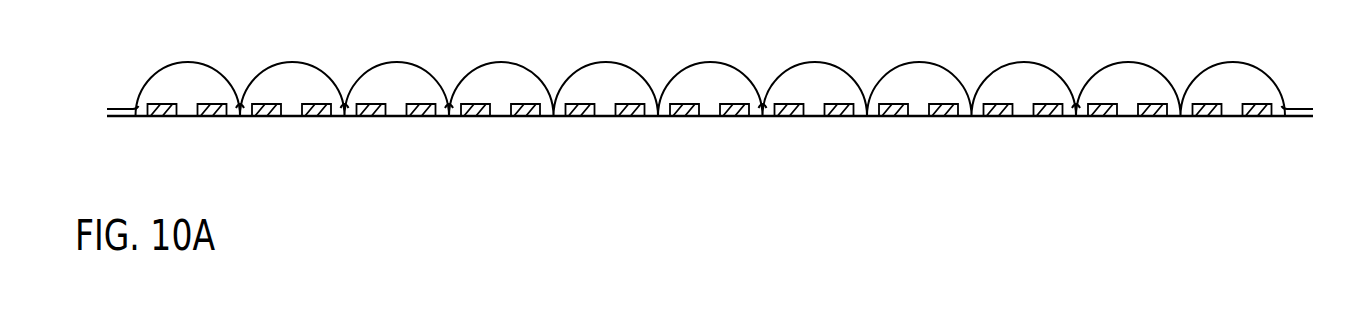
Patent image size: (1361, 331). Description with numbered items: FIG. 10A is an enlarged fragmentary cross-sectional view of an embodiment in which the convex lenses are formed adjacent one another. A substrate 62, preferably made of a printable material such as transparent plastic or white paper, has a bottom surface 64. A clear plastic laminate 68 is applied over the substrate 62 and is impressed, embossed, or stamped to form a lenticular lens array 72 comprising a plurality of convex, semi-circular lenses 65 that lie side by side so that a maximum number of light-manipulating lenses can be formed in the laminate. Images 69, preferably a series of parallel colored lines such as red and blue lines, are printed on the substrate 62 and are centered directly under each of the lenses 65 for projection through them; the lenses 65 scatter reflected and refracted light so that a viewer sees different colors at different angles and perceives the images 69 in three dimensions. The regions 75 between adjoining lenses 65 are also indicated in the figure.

The substrate 62 is at (345, 108).
The bottom surface 64 is at (1180, 117).
The convex lenses 65 is at (292, 62).
The clear plastic laminate 68 is at (97, 114).
The images 69 is at (480, 117).
The lenticular lens array 72 is at (240, 108).
The valley between lens elements 75 is at (450, 83).